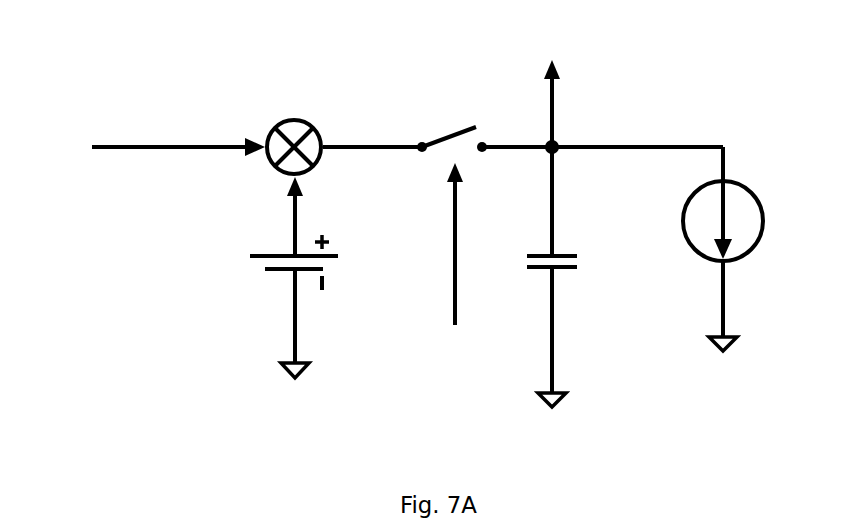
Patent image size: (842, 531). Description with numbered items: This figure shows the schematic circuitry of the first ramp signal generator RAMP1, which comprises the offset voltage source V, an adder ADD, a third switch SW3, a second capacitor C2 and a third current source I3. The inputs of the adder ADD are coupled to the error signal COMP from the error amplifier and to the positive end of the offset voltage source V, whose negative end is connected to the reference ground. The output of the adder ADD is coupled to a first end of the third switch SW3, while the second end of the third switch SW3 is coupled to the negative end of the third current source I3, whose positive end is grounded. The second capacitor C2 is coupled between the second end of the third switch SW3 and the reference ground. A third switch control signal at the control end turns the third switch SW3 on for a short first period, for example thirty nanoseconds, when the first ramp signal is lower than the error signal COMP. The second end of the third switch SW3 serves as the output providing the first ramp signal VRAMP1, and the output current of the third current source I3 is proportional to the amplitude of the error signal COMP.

The error signal COMP is at (161, 130).
The adder ADD is at (294, 128).
The first ramp signal generator RAMP1 is at (398, 108).
The third switch SW3 is at (484, 113).
The first ramp signal VRAMP1 is at (633, 107).
The second capacitor C2 is at (566, 277).
The third current source I3 is at (750, 249).
The offset voltage source V is at (284, 277).